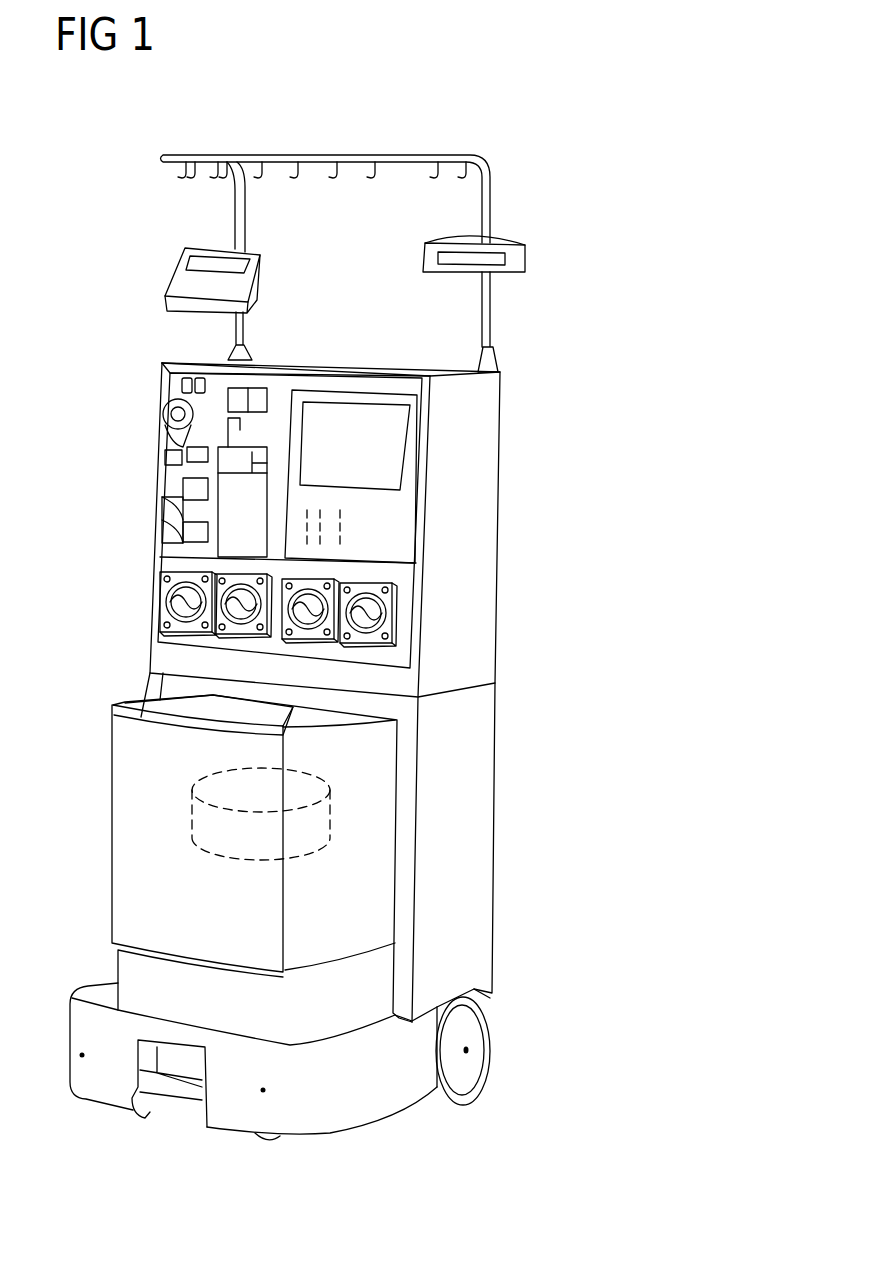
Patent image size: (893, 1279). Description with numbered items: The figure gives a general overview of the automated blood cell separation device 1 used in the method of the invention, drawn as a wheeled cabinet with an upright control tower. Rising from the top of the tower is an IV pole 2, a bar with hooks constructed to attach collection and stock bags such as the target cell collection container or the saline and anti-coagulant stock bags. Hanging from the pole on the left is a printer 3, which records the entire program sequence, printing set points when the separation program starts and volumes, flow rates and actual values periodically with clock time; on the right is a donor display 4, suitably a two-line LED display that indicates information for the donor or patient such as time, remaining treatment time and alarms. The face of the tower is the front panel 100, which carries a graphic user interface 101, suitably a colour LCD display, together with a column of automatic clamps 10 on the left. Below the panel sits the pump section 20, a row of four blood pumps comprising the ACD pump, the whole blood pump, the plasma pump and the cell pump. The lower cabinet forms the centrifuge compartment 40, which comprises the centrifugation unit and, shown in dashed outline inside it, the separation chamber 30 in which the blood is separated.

The automated blood cell separation device 1 is at (327, 118).
The IV pole 2 is at (437, 153).
The printer 3 is at (265, 275).
The donor display 4 is at (527, 253).
The automatic clamps 10 is at (172, 488).
The pump section 20 is at (230, 610).
The separation chamber 30 is at (320, 815).
The centrifuge compartment 40 is at (160, 852).
The front panel 100 is at (263, 523).
The graphic user interface 101 is at (355, 403).